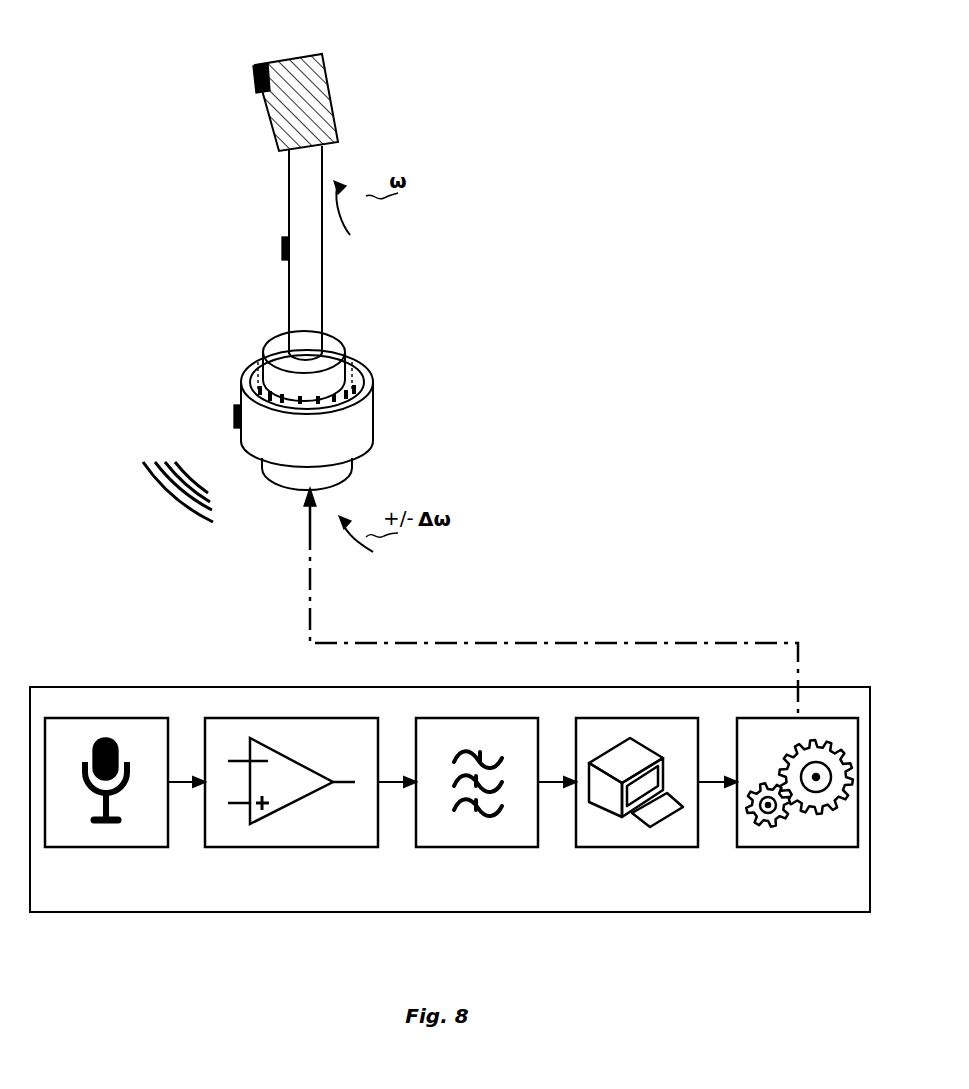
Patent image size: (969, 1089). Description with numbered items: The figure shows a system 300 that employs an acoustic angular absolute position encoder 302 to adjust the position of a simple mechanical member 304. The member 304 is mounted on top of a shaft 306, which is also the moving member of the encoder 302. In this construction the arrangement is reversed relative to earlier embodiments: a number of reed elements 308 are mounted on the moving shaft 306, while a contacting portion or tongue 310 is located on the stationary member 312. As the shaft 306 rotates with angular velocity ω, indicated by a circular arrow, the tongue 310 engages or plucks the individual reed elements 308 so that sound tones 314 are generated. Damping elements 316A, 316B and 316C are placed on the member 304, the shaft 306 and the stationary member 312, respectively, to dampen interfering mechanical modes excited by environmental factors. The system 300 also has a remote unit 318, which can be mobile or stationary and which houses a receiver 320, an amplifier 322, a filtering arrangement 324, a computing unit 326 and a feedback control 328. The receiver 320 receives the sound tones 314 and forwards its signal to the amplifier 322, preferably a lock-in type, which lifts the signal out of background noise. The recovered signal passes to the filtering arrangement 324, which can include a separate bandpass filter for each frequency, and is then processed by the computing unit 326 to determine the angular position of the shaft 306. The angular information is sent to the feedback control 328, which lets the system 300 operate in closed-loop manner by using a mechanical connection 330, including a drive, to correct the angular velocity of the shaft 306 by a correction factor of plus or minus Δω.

The system 300 is at (731, 78).
The acoustic angular absolute position encoder 302 is at (476, 317).
The mechanical member 304 is at (337, 92).
The shaft 306 is at (330, 327).
The reed elements 308 is at (360, 350).
The tongue 310 is at (248, 358).
The stationary member 312 is at (373, 440).
The sound tones 314 is at (145, 473).
The damping element 316A is at (253, 82).
The damping element 316B is at (283, 250).
The damping element 316C is at (235, 417).
The remote unit 318 is at (104, 687).
The receiver 320 is at (78, 848).
The amplifier 322 is at (295, 848).
The filtering arrangement 324 is at (511, 848).
The computing unit 326 is at (640, 848).
The feedback control 328 is at (802, 848).
The mechanical connection 330 is at (308, 597).